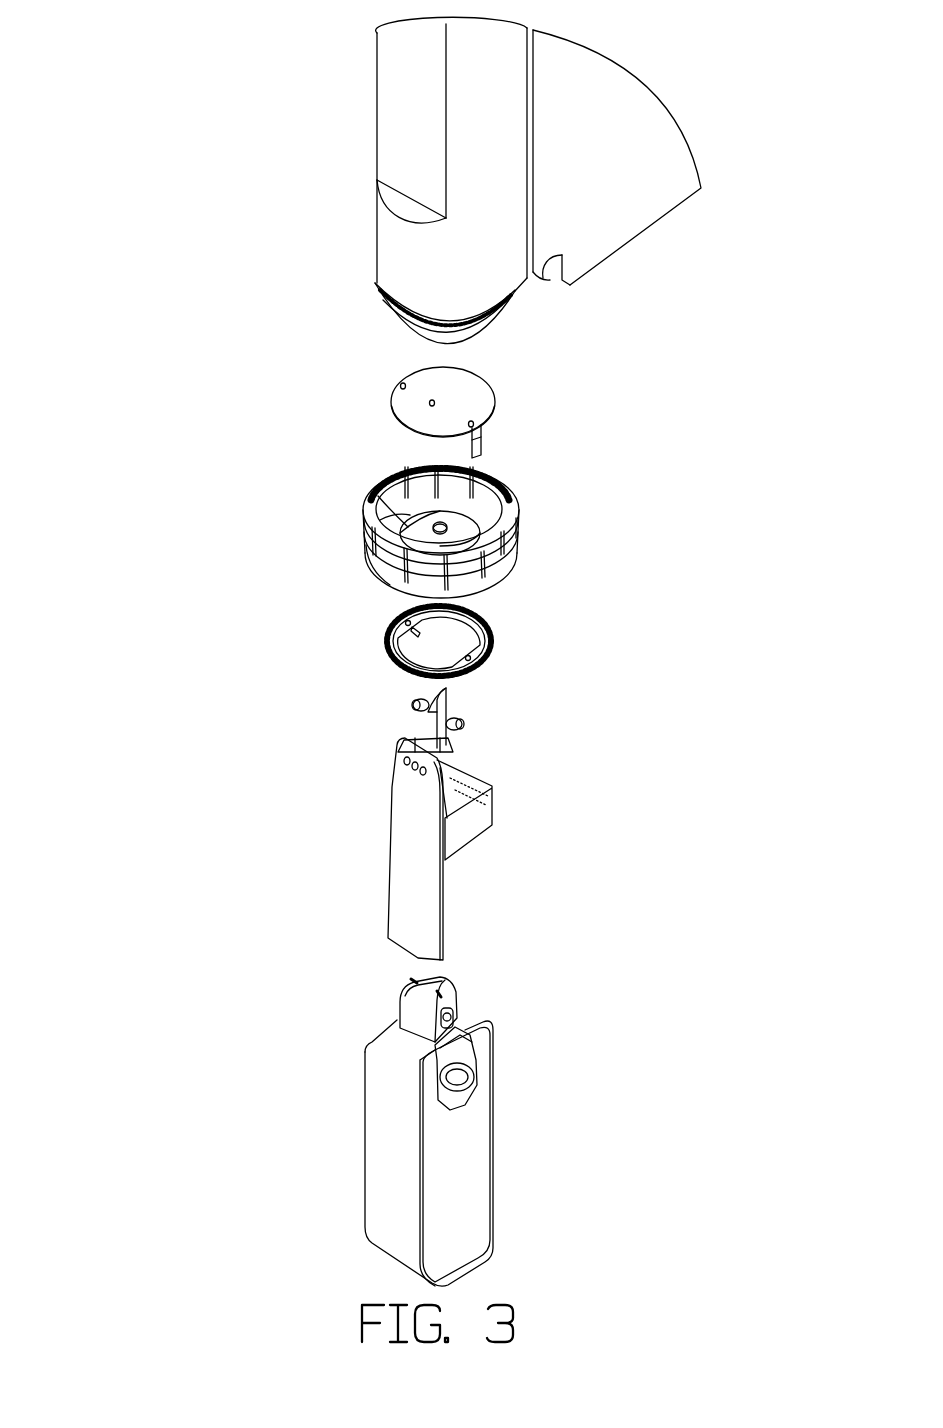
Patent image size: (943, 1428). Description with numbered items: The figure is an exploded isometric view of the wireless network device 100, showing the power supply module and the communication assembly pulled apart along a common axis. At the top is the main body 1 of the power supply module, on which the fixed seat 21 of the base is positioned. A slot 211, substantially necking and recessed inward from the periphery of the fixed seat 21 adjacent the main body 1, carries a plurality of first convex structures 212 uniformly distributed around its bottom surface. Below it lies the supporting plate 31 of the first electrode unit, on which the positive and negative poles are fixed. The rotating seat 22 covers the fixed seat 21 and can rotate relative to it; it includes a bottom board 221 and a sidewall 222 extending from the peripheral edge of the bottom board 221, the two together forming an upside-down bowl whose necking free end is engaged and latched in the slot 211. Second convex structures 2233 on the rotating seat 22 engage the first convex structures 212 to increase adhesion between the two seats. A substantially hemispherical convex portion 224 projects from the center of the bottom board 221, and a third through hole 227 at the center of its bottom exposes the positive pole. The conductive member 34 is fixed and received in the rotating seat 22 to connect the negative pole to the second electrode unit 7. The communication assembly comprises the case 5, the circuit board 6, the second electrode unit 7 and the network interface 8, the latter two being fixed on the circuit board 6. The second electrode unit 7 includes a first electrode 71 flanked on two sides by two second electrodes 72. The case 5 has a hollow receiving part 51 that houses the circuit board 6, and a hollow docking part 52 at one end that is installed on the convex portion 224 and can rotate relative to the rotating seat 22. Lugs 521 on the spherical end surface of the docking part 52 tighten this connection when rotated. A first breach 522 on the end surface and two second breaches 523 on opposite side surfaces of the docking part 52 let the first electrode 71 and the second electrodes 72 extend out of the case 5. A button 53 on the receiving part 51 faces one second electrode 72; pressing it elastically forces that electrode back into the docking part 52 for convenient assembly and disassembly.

The wireless network device 100 is at (163, 52).
The main body 1 is at (413, 145).
The fixed seat 21 is at (430, 323).
The slot 211 is at (385, 305).
The first convex structures 212 is at (422, 320).
The supporting plate 31 is at (480, 387).
The rotating seat 22 is at (440, 527).
The bottom board 221 is at (407, 522).
The sidewall 222 is at (390, 570).
The convex portion 224 is at (420, 540).
The third through hole 227 is at (452, 522).
The second convex structures 2233 is at (487, 478).
The conductive member 34 is at (493, 645).
The second electrode unit 7 is at (386, 719).
The first electrode 71 is at (435, 718).
The second electrodes 72 is at (413, 702).
The network interface 8 is at (483, 810).
The circuit board 6 is at (410, 862).
The case 5 is at (418, 1124).
The receiving part 51 is at (463, 1163).
The docking part 52 is at (447, 1006).
The lug 521 is at (447, 993).
The first breach 522 is at (418, 980).
The second breaches 523 is at (457, 1027).
The button 53 is at (467, 1073).